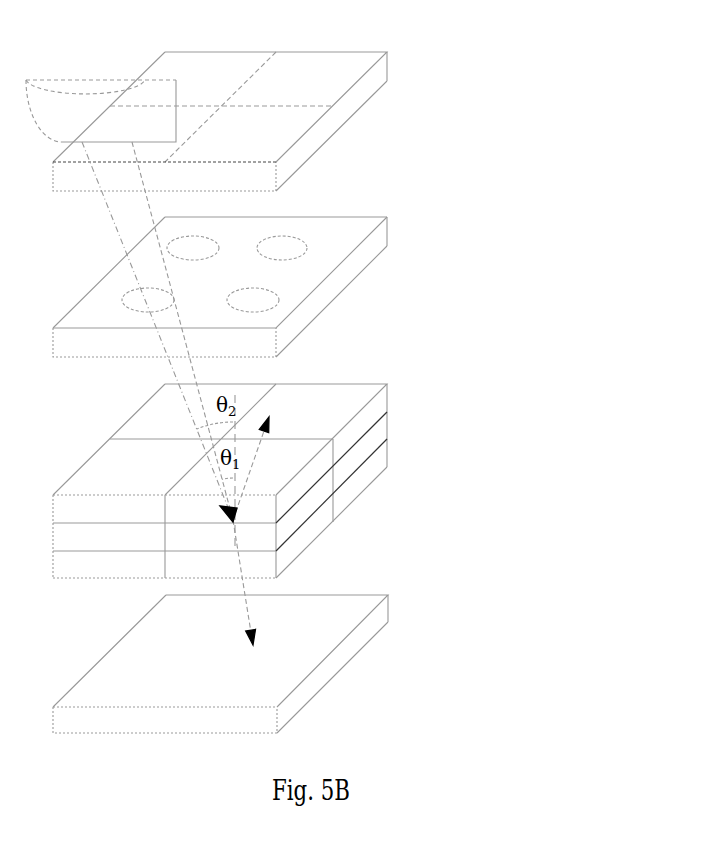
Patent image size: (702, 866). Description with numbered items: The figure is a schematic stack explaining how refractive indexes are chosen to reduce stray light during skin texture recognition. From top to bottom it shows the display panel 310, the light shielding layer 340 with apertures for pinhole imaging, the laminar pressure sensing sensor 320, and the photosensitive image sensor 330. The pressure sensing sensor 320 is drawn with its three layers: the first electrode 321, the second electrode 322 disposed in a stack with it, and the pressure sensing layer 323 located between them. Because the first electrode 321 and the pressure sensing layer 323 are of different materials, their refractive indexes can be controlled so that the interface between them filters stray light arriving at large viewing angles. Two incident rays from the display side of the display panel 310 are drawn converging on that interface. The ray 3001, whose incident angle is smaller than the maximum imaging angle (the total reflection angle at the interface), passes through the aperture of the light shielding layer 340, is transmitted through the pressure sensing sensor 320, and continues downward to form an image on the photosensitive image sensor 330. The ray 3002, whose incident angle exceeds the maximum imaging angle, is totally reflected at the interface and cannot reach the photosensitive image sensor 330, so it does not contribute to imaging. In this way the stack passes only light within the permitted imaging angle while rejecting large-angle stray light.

The display panel 310 is at (372, 78).
The light shielding layer 340 is at (372, 245).
The pressure sensing sensor 320 is at (322, 481).
The first electrode 321 is at (371, 412).
The second electrode 322 is at (371, 439).
The pressure sensing layer 323 is at (371, 467).
The photosensitive image sensor 330 is at (372, 622).
The first light ray 3001 is at (183, 331).
The second light ray 3002 is at (157, 331).